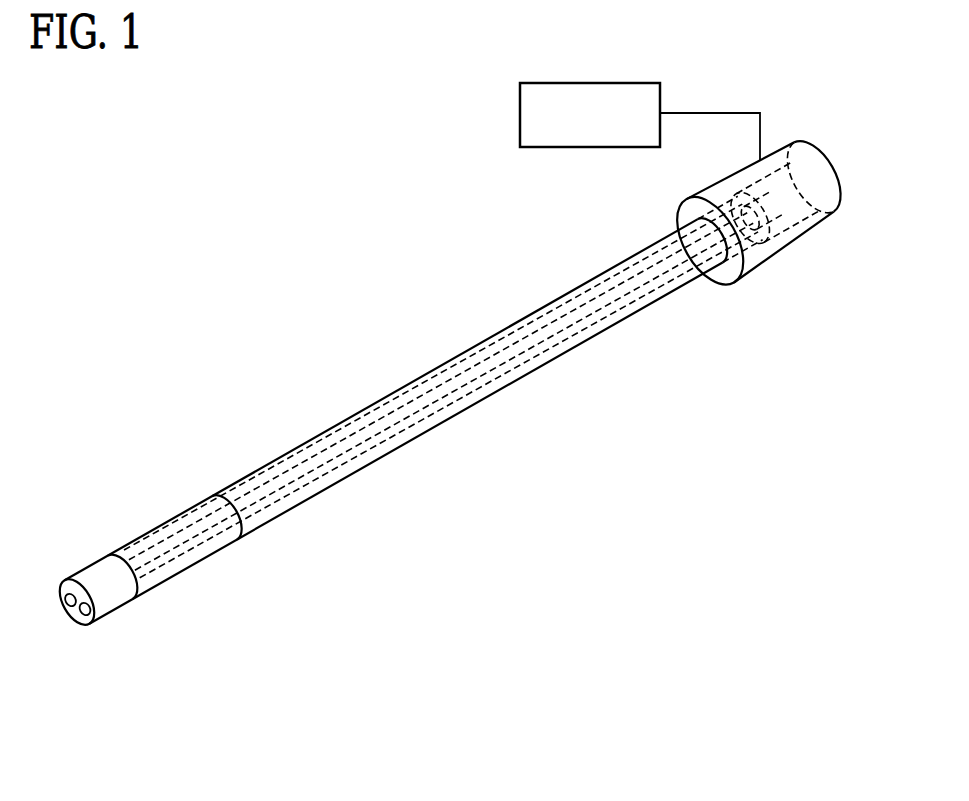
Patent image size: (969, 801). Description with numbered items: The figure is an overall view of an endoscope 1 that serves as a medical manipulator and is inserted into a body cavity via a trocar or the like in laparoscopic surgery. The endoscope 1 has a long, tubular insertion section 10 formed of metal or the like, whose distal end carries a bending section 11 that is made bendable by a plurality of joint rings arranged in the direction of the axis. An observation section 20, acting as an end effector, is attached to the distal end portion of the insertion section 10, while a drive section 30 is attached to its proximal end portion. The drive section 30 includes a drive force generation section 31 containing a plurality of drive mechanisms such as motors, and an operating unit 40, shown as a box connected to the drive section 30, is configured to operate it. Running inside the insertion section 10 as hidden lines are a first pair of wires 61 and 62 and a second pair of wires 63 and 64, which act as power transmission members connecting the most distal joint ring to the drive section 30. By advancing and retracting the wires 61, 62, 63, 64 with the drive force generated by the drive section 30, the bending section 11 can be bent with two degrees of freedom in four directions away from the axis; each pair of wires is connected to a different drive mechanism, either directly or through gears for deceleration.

The endoscope 1 is at (301, 281).
The insertion section 10 is at (383, 400).
The bending section 11 is at (168, 525).
The observation section 20 is at (116, 641).
The drive section 30 is at (802, 266).
The drive force generation section 31 is at (812, 198).
The operating unit 40 is at (506, 107).
The wire 61 is at (485, 352).
The wire 62 is at (472, 393).
The wire 63 is at (307, 482).
The wire 64 is at (277, 490).